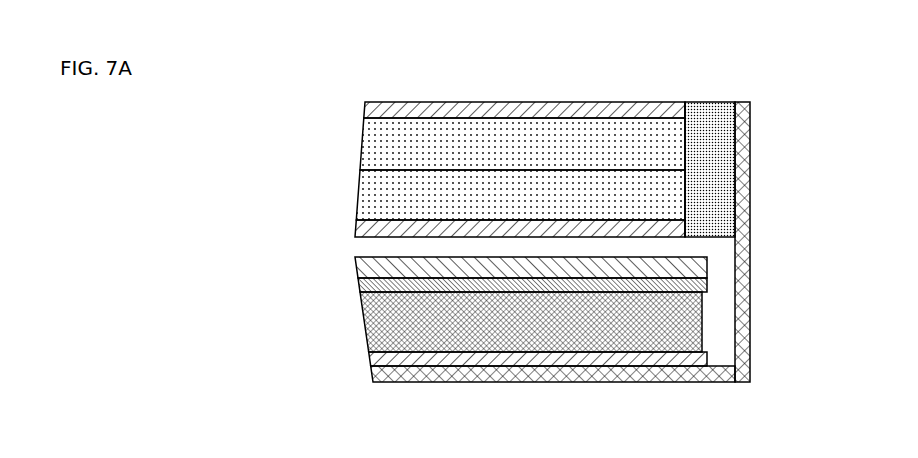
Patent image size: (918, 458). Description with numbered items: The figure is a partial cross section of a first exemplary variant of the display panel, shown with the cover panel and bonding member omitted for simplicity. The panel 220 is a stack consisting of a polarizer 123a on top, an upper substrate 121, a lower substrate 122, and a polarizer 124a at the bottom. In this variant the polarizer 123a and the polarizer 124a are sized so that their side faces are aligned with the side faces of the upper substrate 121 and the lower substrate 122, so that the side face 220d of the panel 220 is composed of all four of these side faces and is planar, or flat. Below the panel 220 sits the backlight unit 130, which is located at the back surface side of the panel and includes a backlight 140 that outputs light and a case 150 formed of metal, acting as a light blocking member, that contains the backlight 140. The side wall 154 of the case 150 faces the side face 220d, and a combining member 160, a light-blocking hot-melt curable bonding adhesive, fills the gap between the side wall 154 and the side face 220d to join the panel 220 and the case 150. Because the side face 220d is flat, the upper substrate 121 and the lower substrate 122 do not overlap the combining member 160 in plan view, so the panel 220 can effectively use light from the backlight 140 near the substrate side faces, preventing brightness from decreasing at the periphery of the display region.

The polarizer 123a is at (473, 108).
The upper substrate 121 is at (563, 137).
The side face 220d is at (687, 152).
The combining member 160 is at (708, 162).
The side wall 154 is at (748, 277).
The case 150 is at (622, 262).
The lower substrate 122 is at (590, 195).
The polarizer 124a is at (417, 228).
The backlight 140 is at (373, 382).
The backlight unit 130 is at (358, 319).
The panel 220 is at (524, 246).